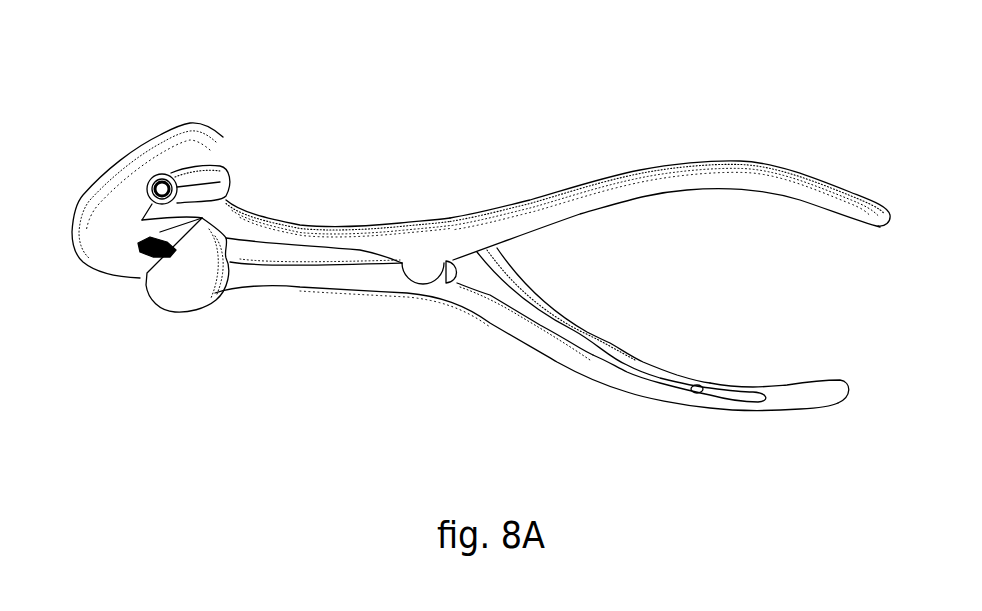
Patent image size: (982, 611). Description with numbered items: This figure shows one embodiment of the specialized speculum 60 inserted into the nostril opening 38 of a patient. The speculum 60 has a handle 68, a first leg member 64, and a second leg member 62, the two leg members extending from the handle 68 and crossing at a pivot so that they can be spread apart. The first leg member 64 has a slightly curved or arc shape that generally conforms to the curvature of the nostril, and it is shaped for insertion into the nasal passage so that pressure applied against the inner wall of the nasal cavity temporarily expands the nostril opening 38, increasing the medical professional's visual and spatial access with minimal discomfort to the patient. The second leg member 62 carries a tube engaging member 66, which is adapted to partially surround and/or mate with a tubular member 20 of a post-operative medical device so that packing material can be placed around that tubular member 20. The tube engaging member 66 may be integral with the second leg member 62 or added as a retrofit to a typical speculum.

The speculum 60 is at (465, 217).
The second leg member 62 is at (343, 227).
The first leg member 64 is at (313, 277).
The tube engaging member 66 is at (191, 170).
The handle 68 is at (737, 160).
The tubular member 20 is at (226, 184).
The nostril opening 38 is at (160, 232).